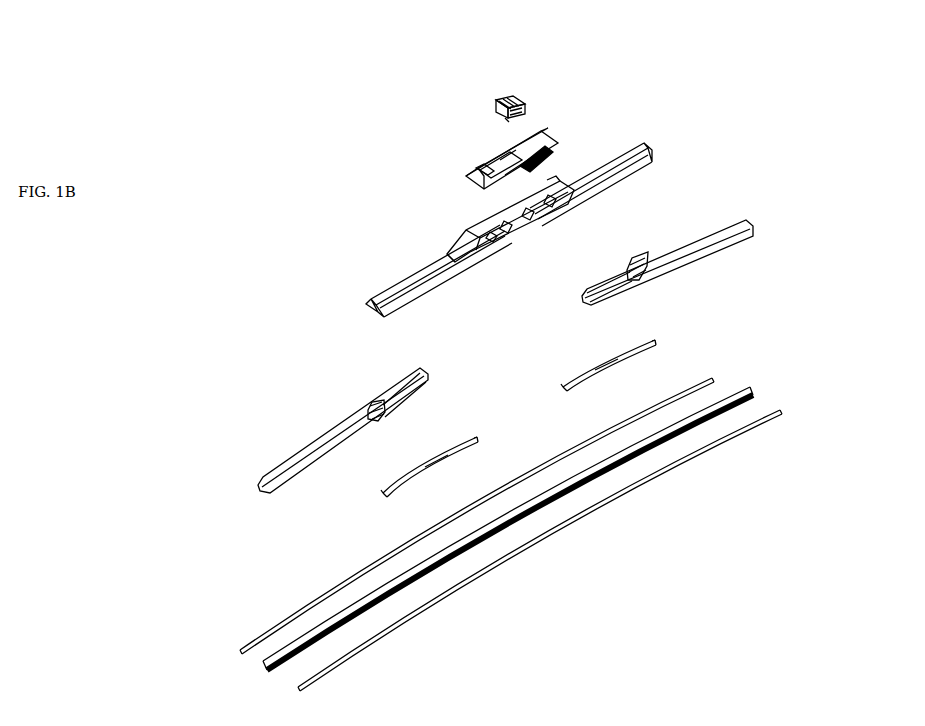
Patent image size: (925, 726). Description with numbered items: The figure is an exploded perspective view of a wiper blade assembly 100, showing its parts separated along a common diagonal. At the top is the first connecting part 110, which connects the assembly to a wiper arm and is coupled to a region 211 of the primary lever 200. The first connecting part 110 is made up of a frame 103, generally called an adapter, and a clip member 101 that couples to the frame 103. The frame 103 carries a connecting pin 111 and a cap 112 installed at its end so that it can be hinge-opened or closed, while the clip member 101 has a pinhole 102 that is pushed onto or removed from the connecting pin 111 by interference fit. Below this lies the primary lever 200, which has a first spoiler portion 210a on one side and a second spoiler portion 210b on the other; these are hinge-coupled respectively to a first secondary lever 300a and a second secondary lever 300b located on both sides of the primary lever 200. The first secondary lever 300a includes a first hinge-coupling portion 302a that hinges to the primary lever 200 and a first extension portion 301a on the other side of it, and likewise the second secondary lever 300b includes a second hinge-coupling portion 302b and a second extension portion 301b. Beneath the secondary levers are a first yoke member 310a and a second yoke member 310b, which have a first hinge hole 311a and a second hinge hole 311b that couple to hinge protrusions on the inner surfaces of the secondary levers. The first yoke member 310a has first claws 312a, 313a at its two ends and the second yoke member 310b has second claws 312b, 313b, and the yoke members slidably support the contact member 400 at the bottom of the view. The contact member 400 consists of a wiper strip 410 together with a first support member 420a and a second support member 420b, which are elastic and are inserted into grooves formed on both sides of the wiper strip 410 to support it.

The wiper blade assembly 100 is at (330, 167).
The first connecting part 110 is at (578, 62).
The clip member 101 is at (536, 92).
The pinhole 102 is at (482, 124).
The frame 103 is at (534, 145).
The connecting pin 111 is at (483, 159).
The cap 112 is at (458, 166).
The primary lever 200 is at (520, 208).
The first spoiler portion 210a is at (445, 293).
The second spoiler portion 210b is at (607, 197).
The region of the primary lever 211 is at (523, 251).
The first secondary lever 300a is at (341, 419).
The first extension portion 301a is at (394, 381).
The first hinge-coupling portion 302a is at (357, 390).
The second secondary lever 300b is at (667, 246).
The second extension portion 301b is at (609, 272).
The second hinge-coupling portion 302b is at (640, 251).
The first yoke member 310a is at (403, 486).
The first hinge hole 311a is at (437, 469).
The first claw 312a is at (385, 504).
The first claw 313a is at (470, 451).
The second yoke member 310b is at (623, 355).
The second hinge hole 311b is at (607, 368).
The second claw 312b is at (565, 397).
The second claw 313b is at (653, 353).
The contact member 400 is at (796, 363).
The wiper strip 410 is at (520, 510).
The first support member 420a is at (496, 493).
The second support member 420b is at (552, 529).